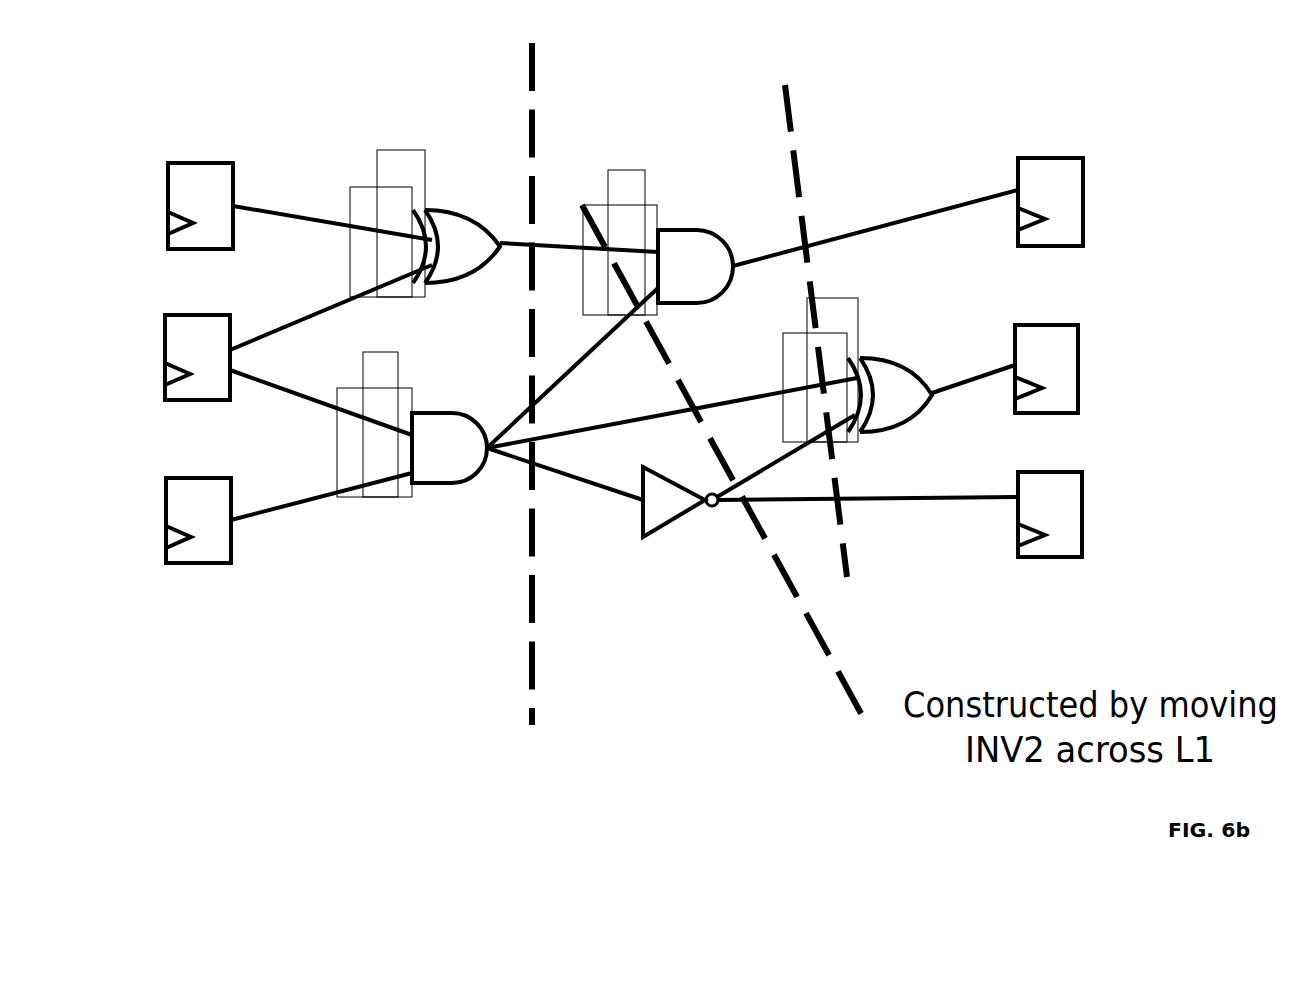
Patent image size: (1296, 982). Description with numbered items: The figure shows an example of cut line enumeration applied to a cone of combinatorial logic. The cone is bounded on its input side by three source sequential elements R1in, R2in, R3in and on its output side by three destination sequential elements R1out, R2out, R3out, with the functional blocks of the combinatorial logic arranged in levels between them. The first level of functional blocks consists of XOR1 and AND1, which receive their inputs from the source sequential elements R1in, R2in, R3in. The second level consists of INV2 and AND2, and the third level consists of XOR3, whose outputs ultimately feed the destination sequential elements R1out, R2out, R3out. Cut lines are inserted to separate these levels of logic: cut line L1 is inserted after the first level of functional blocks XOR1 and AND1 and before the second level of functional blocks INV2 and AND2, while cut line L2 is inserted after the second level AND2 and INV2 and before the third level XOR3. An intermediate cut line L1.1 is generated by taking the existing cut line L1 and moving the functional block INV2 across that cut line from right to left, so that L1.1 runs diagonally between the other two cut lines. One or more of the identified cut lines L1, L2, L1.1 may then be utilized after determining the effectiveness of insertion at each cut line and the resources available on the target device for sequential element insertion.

The source sequential element R1in is at (257, 206).
The source sequential element R2in is at (257, 350).
The source sequential element R3in is at (247, 518).
The destination sequential element R1out is at (963, 212).
The destination sequential element R2out is at (1063, 369).
The destination sequential element R3out is at (956, 514).
The functional block XOR1 is at (504, 220).
The functional block AND1 is at (597, 428).
The functional block AND2 is at (660, 239).
The functional block XOR3 is at (859, 370).
The functional block INV2 is at (739, 511).
The cut line L1 is at (522, 362).
The cut line L2 is at (858, 301).
The intermediate cut line L1.1 is at (747, 490).